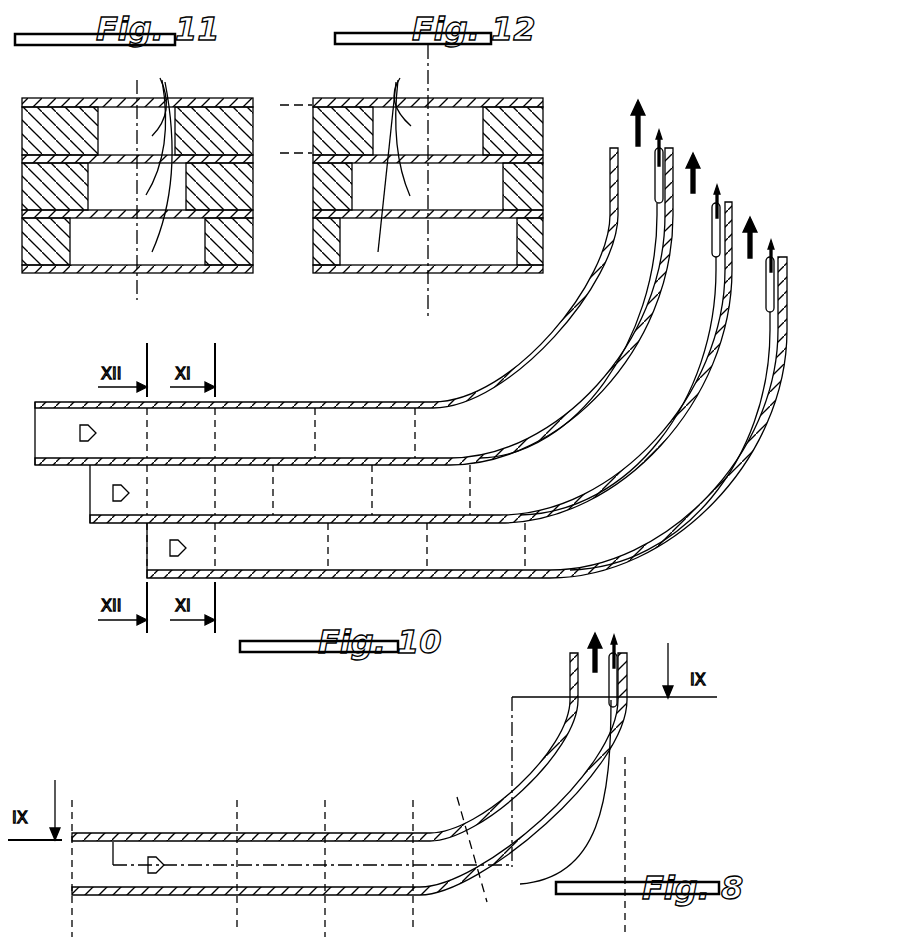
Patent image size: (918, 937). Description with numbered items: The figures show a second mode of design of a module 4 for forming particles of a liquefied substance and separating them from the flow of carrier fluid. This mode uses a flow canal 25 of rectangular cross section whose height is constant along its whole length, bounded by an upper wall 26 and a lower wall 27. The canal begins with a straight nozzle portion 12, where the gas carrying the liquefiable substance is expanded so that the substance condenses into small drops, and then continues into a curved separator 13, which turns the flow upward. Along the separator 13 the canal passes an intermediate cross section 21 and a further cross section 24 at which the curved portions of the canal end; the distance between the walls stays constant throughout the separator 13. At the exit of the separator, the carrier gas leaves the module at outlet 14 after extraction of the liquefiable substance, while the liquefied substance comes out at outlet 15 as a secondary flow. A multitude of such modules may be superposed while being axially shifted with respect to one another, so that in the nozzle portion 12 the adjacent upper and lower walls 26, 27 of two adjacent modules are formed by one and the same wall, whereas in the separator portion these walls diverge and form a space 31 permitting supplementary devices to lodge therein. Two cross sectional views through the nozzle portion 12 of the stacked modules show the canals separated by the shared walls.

In FIG. 8, the module 4 is at (182, 762).
In FIG. 10, the nozzle portion 12 is at (283, 392).
In FIG. 8, the nozzle portion 12 is at (296, 792).
In FIG. 10, the separator 13 is at (475, 370).
In FIG. 8, the separator 13 is at (472, 740).
In FIG. 8, the carrier gas outlet 14 is at (576, 655).
In FIG. 8, the liquefied substance outlet 15 is at (621, 652).
In FIG. 8, the intermediate cross section 21 is at (488, 911).
In FIG. 8, the cross section 24 is at (637, 700).
In FIG. 11, the flow canal 25 is at (163, 155).
In FIG. 12, the flow canal 25 is at (399, 154).
In FIG. 10, the flow canal 25 is at (336, 489).
In FIG. 8, the flow canal 25 is at (285, 865).
In FIG. 11, the wall 26 is at (94, 99).
In FIG. 12, the wall 26 is at (474, 99).
In FIG. 10, the wall 26 is at (363, 402).
In FIG. 8, the wall 26 is at (373, 840).
In FIG. 11, the wall 27 is at (150, 274).
In FIG. 12, the wall 27 is at (356, 273).
In FIG. 10, the wall 27 is at (393, 578).
In FIG. 8, the wall 27 is at (365, 895).
In FIG. 10, the space 31 is at (599, 400).